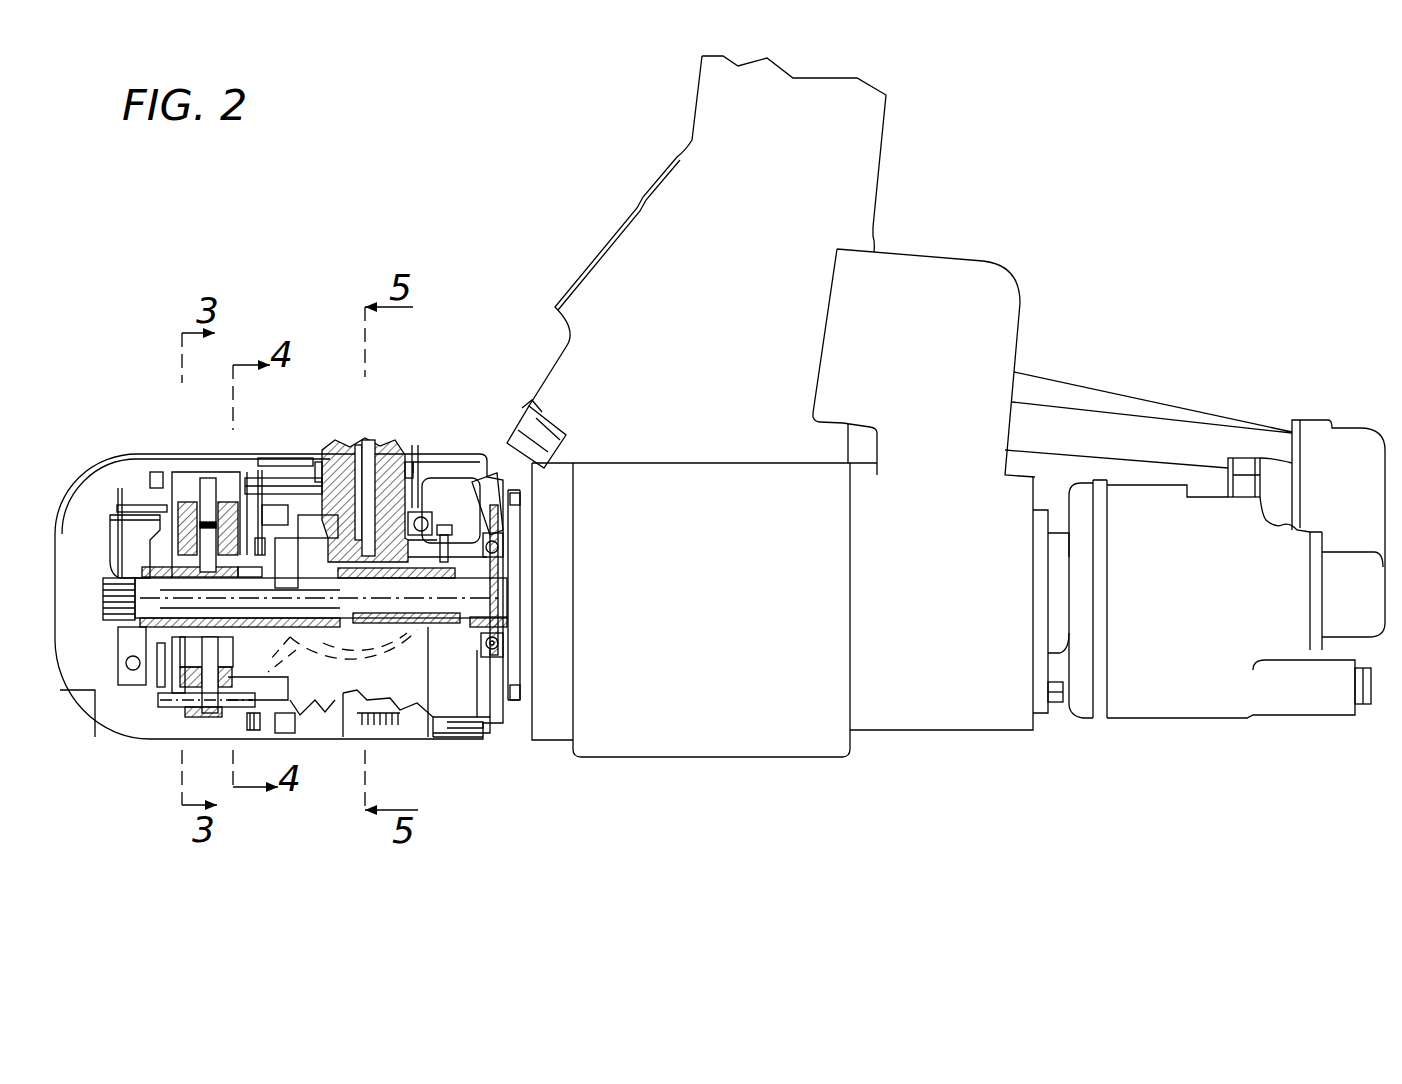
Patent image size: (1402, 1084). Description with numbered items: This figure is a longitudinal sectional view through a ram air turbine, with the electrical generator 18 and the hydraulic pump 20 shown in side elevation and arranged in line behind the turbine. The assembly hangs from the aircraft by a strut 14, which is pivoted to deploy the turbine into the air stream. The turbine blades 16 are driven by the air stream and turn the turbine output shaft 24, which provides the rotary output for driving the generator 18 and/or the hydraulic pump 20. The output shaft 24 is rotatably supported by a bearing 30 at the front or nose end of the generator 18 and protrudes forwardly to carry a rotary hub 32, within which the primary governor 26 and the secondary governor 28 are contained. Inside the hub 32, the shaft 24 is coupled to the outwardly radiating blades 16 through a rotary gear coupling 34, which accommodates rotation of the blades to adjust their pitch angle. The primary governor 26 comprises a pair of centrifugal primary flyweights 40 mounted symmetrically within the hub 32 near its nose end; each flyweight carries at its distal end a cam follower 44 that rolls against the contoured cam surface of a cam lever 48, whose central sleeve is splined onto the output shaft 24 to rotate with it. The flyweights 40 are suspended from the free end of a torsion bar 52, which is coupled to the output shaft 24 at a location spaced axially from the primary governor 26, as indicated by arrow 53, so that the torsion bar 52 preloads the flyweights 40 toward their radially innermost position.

The strut 14 is at (857, 185).
The turbine blades 16 is at (363, 433).
The electrical generator 18 is at (705, 711).
The hydraulic pump 20 is at (1170, 675).
The turbine output shaft 24 is at (450, 630).
The primary governor 26 is at (133, 699).
The secondary governor 28 is at (313, 663).
The bearing 30 is at (480, 645).
The rotary hub 32 is at (437, 462).
The rotary gear coupling 34 is at (392, 443).
The primary flyweights 40 is at (187, 497).
The cam follower 44 is at (227, 490).
The cam lever 48 is at (203, 487).
The torsion bar 52 is at (105, 600).
The arrow 53 is at (470, 592).